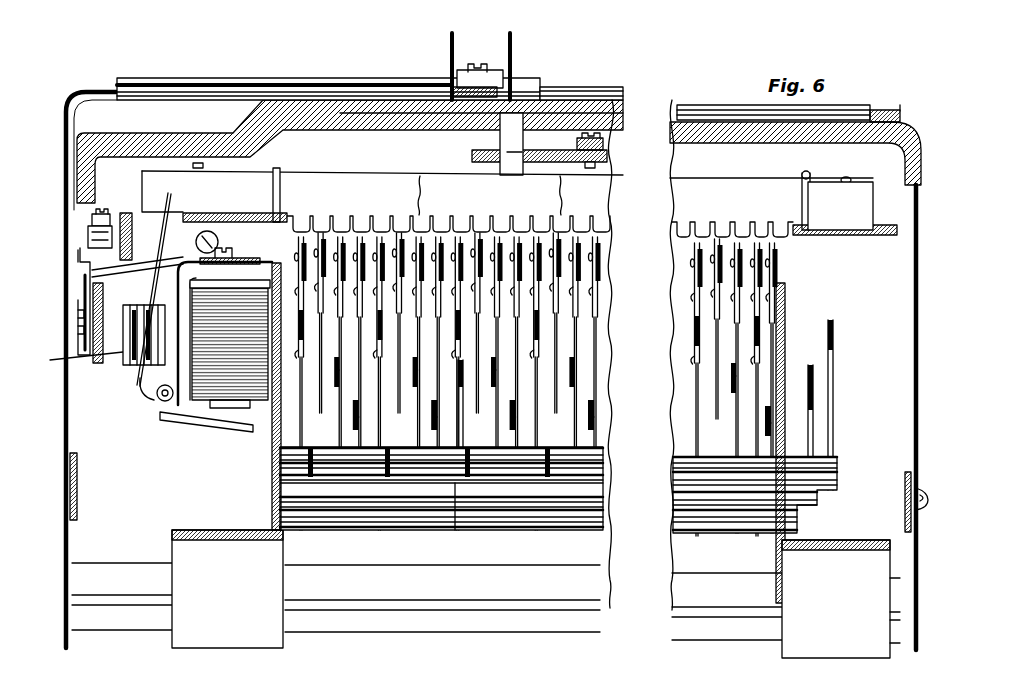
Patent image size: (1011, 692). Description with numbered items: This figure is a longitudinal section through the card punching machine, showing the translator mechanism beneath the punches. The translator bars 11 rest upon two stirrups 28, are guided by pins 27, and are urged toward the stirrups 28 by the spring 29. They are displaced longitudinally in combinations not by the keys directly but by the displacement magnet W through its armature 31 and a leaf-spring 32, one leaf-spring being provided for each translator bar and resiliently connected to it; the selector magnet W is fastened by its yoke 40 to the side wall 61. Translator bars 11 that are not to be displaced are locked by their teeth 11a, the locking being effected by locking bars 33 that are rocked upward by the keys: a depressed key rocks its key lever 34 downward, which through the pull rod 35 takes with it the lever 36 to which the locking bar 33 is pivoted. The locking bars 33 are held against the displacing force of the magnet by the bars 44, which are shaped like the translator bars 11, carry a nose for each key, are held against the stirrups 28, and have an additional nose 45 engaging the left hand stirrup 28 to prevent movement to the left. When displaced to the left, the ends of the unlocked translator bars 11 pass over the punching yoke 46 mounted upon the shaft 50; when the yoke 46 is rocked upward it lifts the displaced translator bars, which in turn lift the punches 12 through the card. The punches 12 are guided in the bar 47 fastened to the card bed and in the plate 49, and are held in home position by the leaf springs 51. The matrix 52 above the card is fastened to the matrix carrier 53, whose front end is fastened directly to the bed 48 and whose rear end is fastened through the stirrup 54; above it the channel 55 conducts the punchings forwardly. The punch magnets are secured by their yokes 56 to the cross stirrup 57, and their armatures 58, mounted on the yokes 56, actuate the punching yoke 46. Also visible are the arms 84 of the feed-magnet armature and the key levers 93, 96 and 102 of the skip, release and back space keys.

The arms 84 is at (316, 100).
The plate 49 is at (597, 110).
The matrix 52 is at (450, 88).
The matrix carrier 53 is at (452, 90).
The stirrup 54 is at (498, 72).
The channel 55 is at (514, 48).
The bar 47 is at (603, 162).
The punches 12 is at (500, 142).
The leaf springs 51 is at (603, 145).
The translator bars 11 is at (547, 190).
The pins 27 is at (277, 168).
The stirrups 28 is at (232, 212).
The spring 29 is at (700, 176).
The bed 48 is at (918, 143).
The bars 44 is at (597, 212).
The nose 45 is at (291, 220).
The locking bars 33 is at (384, 203).
The teeth 11a is at (285, 236).
The lever 36 is at (600, 305).
The pull rod 35 is at (600, 357).
The key lever 102 is at (834, 395).
The key lever 96 is at (814, 417).
The key lever 34 is at (403, 485).
The key lever 93 is at (455, 483).
The side wall 61 is at (272, 482).
The punching yoke 46 is at (118, 220).
The armatures 58 is at (70, 225).
The cross stirrup 57 is at (82, 295).
The magnet yokes 56 is at (97, 320).
The leaf-springs 32 is at (168, 193).
The shaft 50 is at (206, 240).
The displacement magnet W is at (233, 390).
The yokes 40 is at (176, 405).
The armatures 31 is at (194, 412).